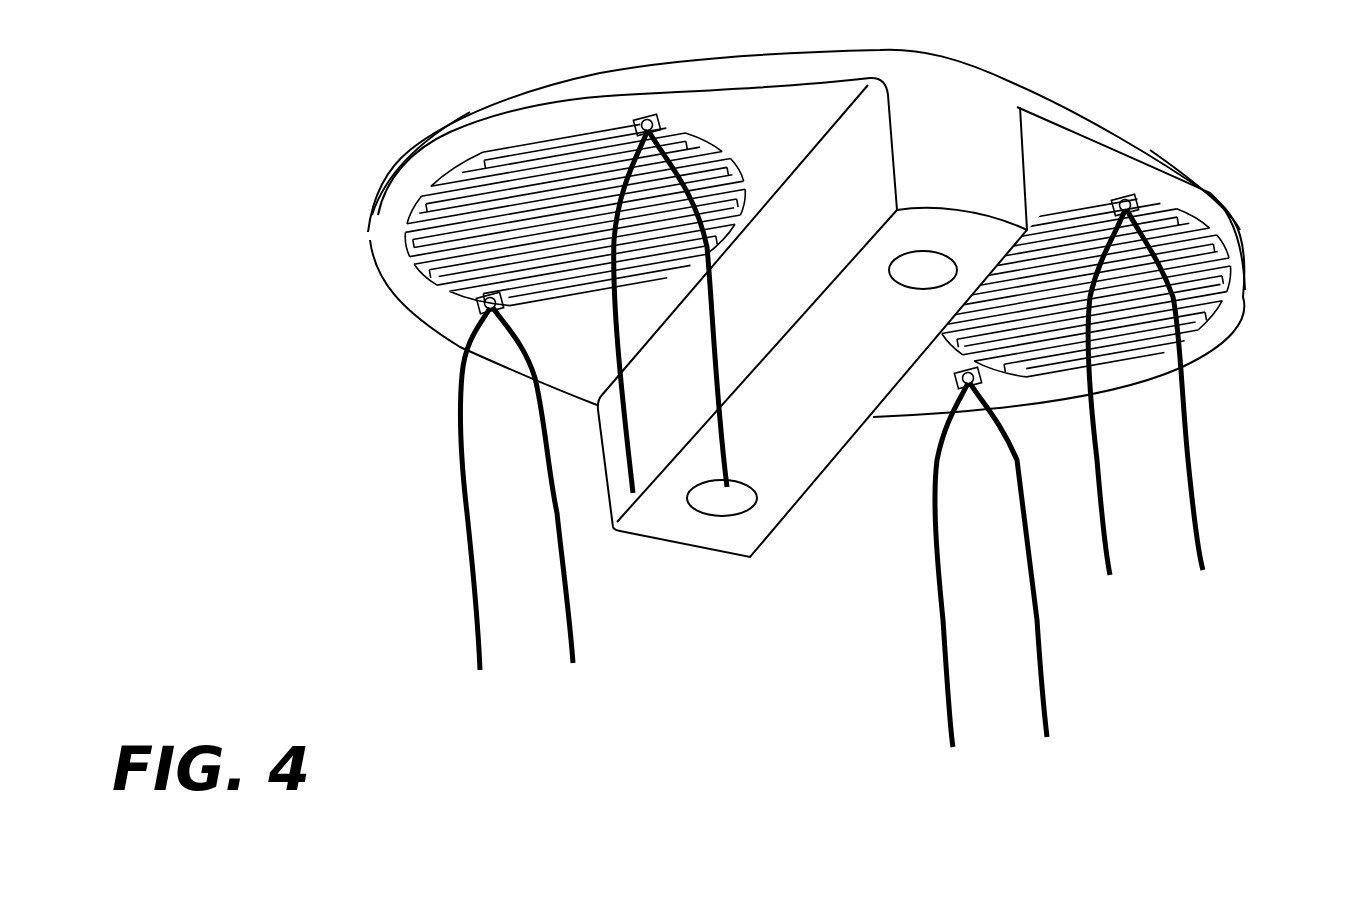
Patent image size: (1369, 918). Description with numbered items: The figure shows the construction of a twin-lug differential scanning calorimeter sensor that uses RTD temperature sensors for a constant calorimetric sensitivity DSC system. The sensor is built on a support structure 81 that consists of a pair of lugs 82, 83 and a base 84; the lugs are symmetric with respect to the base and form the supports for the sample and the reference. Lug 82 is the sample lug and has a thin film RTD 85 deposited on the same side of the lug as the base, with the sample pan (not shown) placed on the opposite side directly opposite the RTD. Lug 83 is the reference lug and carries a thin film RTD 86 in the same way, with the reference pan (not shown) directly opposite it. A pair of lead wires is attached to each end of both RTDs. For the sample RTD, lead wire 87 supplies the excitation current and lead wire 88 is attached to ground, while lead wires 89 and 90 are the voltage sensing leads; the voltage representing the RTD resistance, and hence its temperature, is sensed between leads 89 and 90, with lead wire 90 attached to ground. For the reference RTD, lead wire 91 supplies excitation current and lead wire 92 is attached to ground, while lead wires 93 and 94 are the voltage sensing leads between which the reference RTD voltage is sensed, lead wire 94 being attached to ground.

The support structure 81 is at (1070, 110).
The sample lug 82 is at (417, 133).
The reference lug 83 is at (1233, 213).
The base 84 is at (943, 203).
The thin film RTD 85 is at (397, 220).
The thin film RTD 86 is at (1243, 290).
The lead wire 87 is at (720, 493).
The lead wire 88 is at (573, 665).
The lead wire 89 is at (630, 498).
The lead wire 90 is at (480, 670).
The lead wire 91 is at (1203, 570).
The lead wire 92 is at (1047, 738).
The lead wire 93 is at (1110, 576).
The lead wire 94 is at (953, 748).